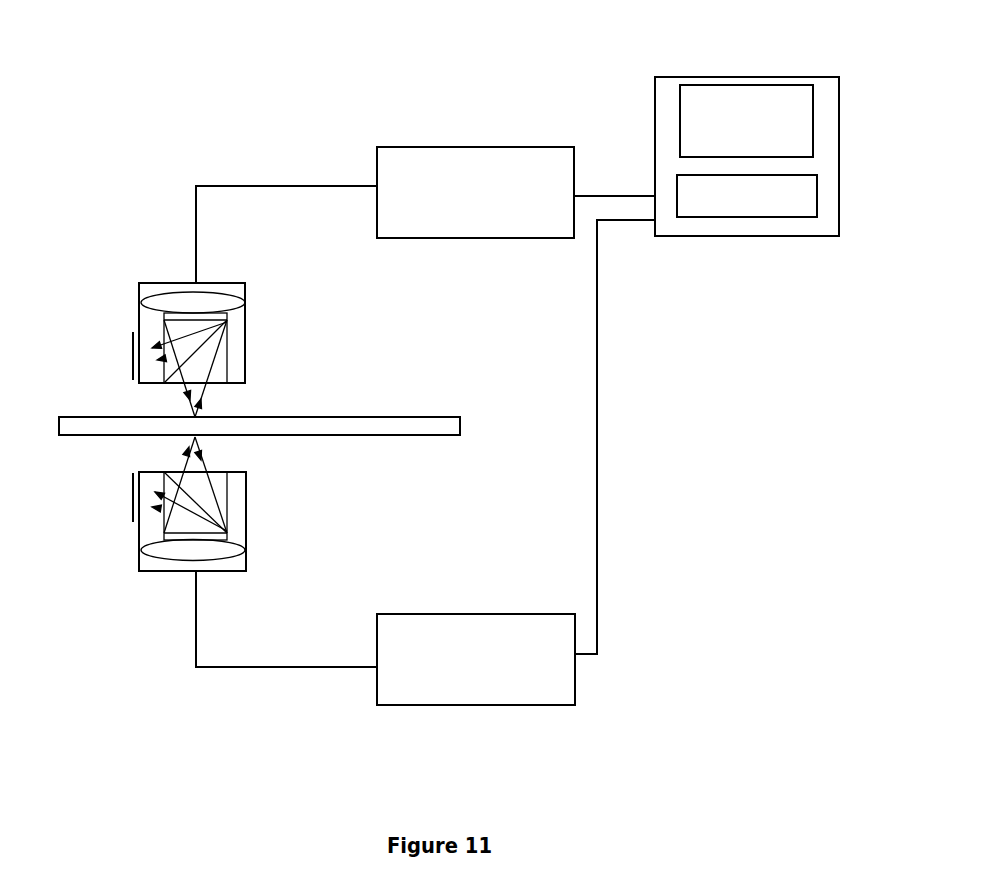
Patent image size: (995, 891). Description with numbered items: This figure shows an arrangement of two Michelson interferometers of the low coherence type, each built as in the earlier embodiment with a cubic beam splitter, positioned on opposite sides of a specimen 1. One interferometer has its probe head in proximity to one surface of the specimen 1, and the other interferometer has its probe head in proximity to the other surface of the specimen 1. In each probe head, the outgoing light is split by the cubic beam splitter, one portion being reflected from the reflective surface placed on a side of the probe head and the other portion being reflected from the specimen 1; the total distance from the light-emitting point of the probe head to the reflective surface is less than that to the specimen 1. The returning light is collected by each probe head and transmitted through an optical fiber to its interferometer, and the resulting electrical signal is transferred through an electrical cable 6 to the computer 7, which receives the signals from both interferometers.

The specimen 1 is at (385, 415).
The electrical cable 6 is at (613, 183).
The computer 7 is at (777, 73).